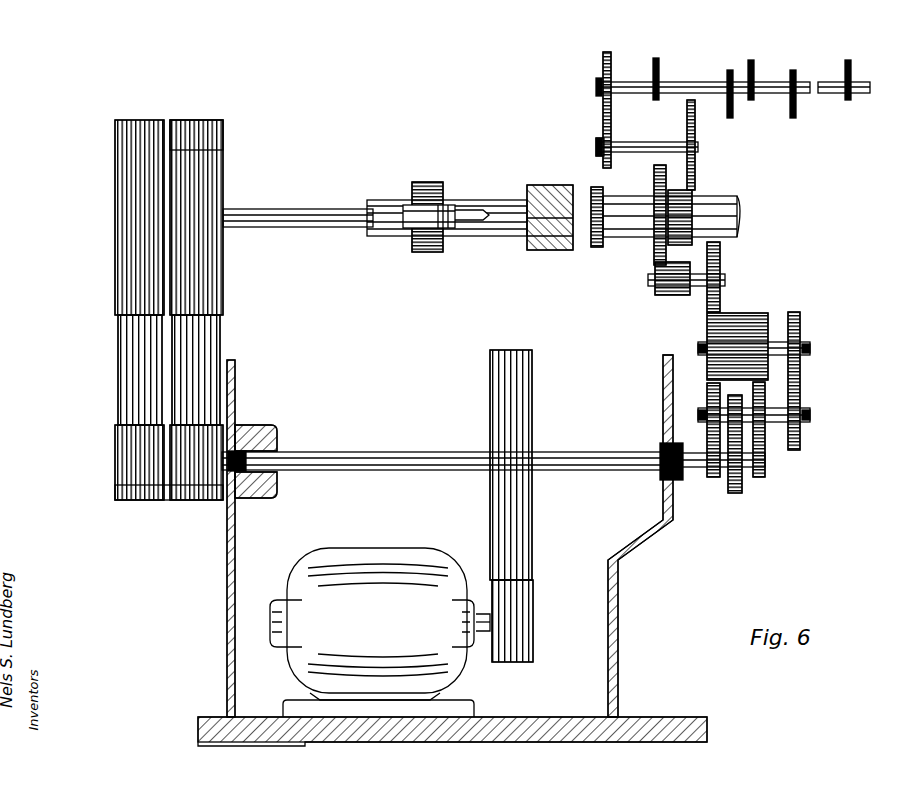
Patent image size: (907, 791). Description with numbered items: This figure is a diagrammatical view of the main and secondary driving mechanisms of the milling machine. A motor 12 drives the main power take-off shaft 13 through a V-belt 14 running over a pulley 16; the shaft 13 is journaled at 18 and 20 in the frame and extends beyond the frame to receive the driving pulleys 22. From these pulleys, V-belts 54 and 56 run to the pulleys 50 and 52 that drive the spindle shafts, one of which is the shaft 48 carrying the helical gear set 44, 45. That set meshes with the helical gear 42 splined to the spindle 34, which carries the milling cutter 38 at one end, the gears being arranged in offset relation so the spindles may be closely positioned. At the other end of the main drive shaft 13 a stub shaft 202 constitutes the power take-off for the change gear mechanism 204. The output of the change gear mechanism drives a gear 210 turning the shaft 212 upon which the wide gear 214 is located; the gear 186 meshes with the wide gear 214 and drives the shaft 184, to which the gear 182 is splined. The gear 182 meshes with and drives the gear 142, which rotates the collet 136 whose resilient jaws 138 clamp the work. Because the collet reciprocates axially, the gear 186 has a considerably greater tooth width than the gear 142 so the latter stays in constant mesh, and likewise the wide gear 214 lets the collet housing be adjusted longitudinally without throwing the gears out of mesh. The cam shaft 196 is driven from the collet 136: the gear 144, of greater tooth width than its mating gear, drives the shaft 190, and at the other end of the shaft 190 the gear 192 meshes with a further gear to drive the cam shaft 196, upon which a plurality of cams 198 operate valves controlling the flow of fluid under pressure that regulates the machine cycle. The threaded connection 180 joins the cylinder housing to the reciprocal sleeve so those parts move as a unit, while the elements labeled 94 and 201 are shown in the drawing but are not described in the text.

The motor 12 is at (390, 550).
The main power take-off shaft 13 is at (382, 452).
The V-belt 14 is at (531, 576).
The pulley 16 is at (530, 394).
The journal 18 is at (273, 436).
The journal 20 is at (663, 451).
The driving pulleys 22 is at (170, 500).
The spindle 34 is at (488, 212).
The milling cutter 38 is at (558, 250).
The helical gear 42 is at (427, 182).
The helical gear 44 is at (412, 240).
The helical gear 45 is at (446, 234).
The shaft 48 is at (336, 227).
The pulley 50 is at (126, 120).
The pulley 52 is at (210, 150).
The V-belt 54 is at (114, 360).
The V-belt 56 is at (216, 350).
The gear 94 is at (606, 62).
The collet 136 is at (632, 237).
The resilient jaws 138 is at (600, 187).
The gear 142 is at (652, 186).
The gear 144 is at (692, 200).
The threaded connection 180 is at (692, 176).
The gear 182 is at (670, 296).
The shaft 184 is at (702, 288).
The gear 186 is at (718, 264).
The shaft 190 is at (632, 142).
The gear 192 is at (596, 143).
The cam shaft 196 is at (682, 84).
The cams 198 is at (658, 66).
The shaft 201 is at (768, 416).
The stub shaft 202 is at (710, 482).
The change gear mechanism 204 is at (765, 444).
The gear 210 is at (800, 324).
The shaft 212 is at (774, 341).
The wide gear 214 is at (728, 314).